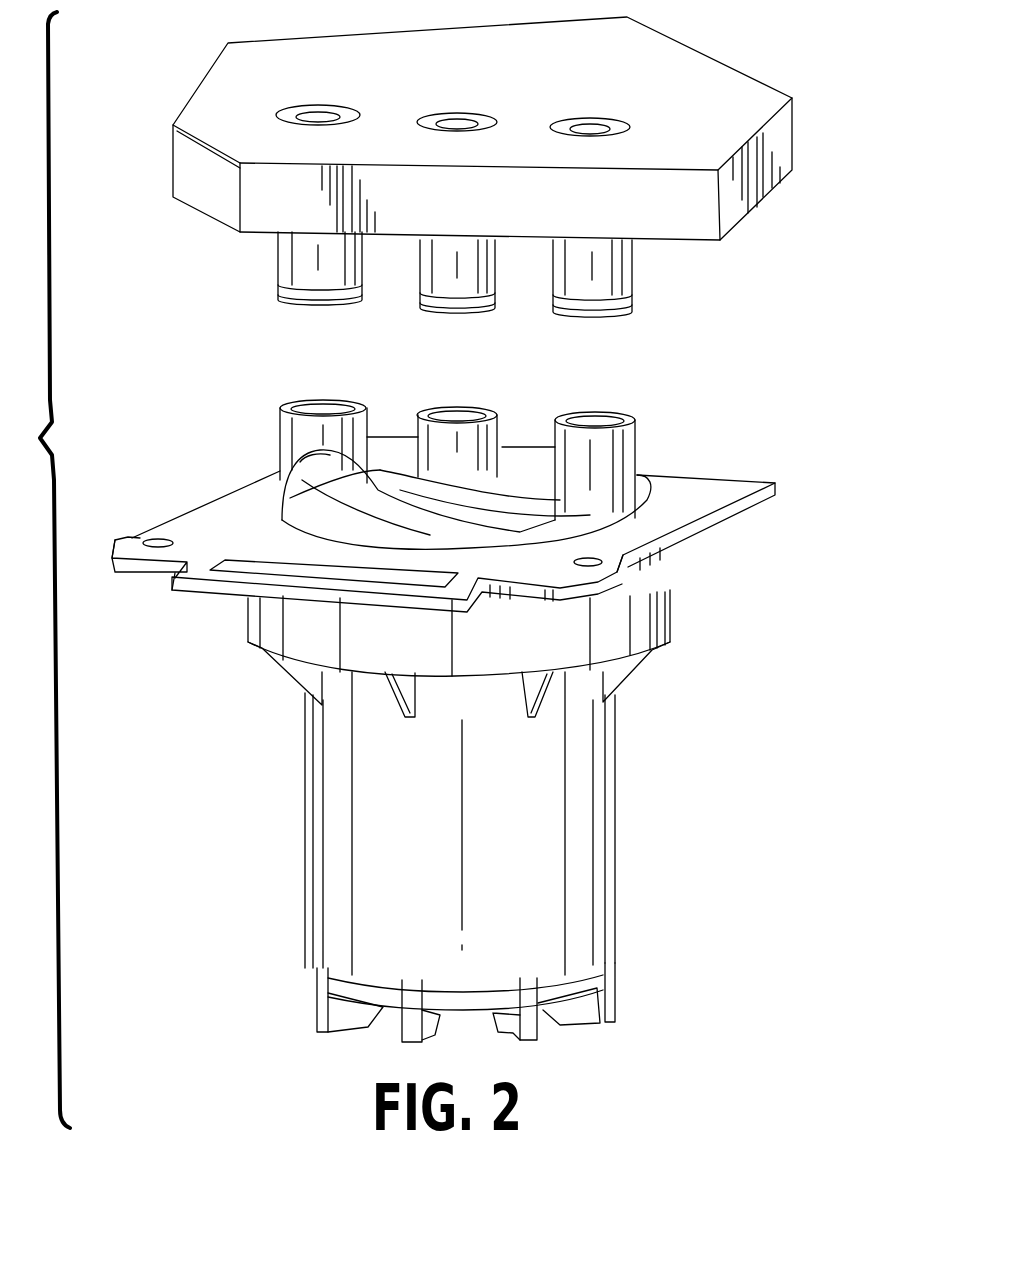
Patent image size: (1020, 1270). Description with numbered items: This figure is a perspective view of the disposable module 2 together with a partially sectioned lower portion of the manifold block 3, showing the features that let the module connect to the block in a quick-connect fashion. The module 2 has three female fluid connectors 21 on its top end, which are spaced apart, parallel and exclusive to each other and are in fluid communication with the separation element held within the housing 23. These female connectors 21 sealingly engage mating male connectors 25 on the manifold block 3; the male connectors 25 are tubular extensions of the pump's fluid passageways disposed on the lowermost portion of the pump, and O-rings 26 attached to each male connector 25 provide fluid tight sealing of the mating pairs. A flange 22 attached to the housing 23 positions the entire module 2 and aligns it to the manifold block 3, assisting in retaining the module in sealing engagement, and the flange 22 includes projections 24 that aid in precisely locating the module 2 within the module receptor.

The disposable module 2 is at (200, 757).
The manifold block 3 is at (793, 142).
The female fluid connectors 21 is at (568, 415).
The flange 22 is at (778, 488).
The housing 23 is at (617, 827).
The projections 24 is at (115, 540).
The male connectors 25 is at (278, 258).
The O-rings 26 is at (276, 290).